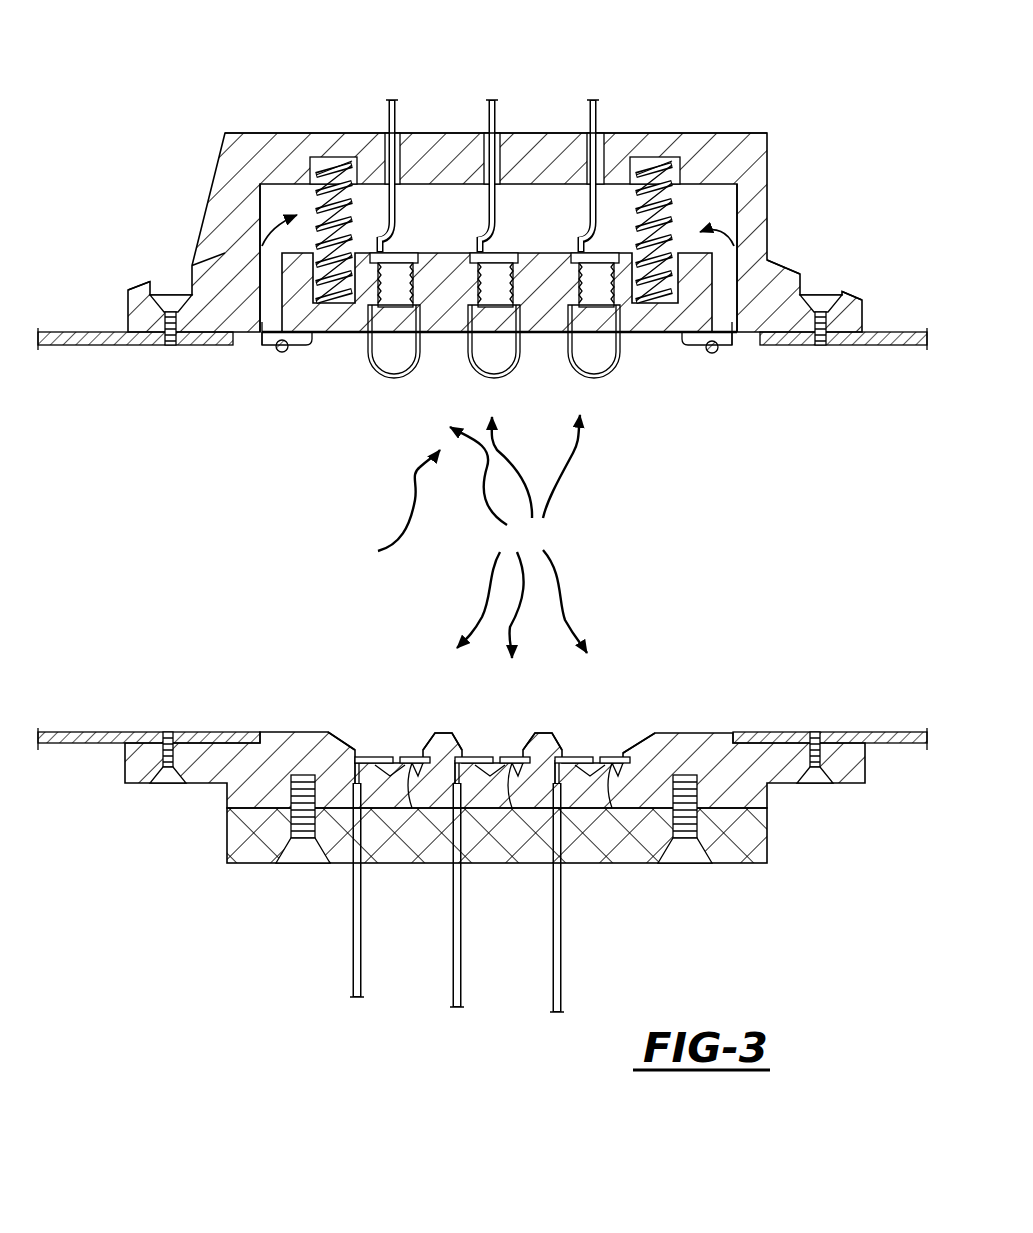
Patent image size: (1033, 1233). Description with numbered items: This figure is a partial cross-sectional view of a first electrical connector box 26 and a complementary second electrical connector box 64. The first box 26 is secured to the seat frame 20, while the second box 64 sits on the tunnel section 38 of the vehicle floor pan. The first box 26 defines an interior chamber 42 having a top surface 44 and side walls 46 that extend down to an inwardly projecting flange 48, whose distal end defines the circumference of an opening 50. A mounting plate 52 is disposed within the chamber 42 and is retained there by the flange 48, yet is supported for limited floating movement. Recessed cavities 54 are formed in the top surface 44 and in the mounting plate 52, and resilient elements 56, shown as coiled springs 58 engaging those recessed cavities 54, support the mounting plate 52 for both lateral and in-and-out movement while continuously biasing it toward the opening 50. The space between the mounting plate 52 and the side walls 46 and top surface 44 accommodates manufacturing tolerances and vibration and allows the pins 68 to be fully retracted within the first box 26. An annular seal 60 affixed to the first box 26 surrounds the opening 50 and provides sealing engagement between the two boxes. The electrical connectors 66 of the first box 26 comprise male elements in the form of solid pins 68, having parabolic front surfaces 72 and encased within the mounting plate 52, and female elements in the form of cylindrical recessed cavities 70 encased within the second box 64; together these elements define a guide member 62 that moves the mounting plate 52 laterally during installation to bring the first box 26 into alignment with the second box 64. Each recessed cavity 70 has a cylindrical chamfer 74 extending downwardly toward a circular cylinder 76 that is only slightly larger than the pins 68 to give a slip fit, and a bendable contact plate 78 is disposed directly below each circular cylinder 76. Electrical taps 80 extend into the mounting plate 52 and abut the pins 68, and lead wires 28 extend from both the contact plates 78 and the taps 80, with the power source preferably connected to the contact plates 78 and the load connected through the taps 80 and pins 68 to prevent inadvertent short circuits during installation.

The seat frame 20 is at (878, 332).
The first electrical connector box 26 is at (757, 170).
The lead wires 28 is at (398, 116).
The tunnel section 38 is at (893, 748).
The interior chamber 42 is at (563, 226).
The top surface 44 is at (266, 131).
The side walls 46 is at (266, 200).
The inwardly projecting flange 48 is at (300, 347).
The opening 50 is at (317, 346).
The mounting plate 52 is at (425, 308).
The recessed cavities 54 is at (336, 158).
The resilient elements 56 is at (262, 243).
The coiled springs 58 is at (368, 165).
The annular seal 60 is at (282, 353).
The guide member 62 is at (391, 508).
The second electrical connector box 64 is at (722, 791).
The electrical connectors 66 is at (518, 536).
The pins 68 is at (381, 347).
The recessed cavities 70 is at (401, 772).
The parabolic front surfaces 72 is at (401, 383).
The cylindrical chamfer 74 is at (345, 733).
The circular cylinder 76 is at (372, 756).
The bendable contact plate 78 is at (395, 756).
The electrical taps 80 is at (397, 248).